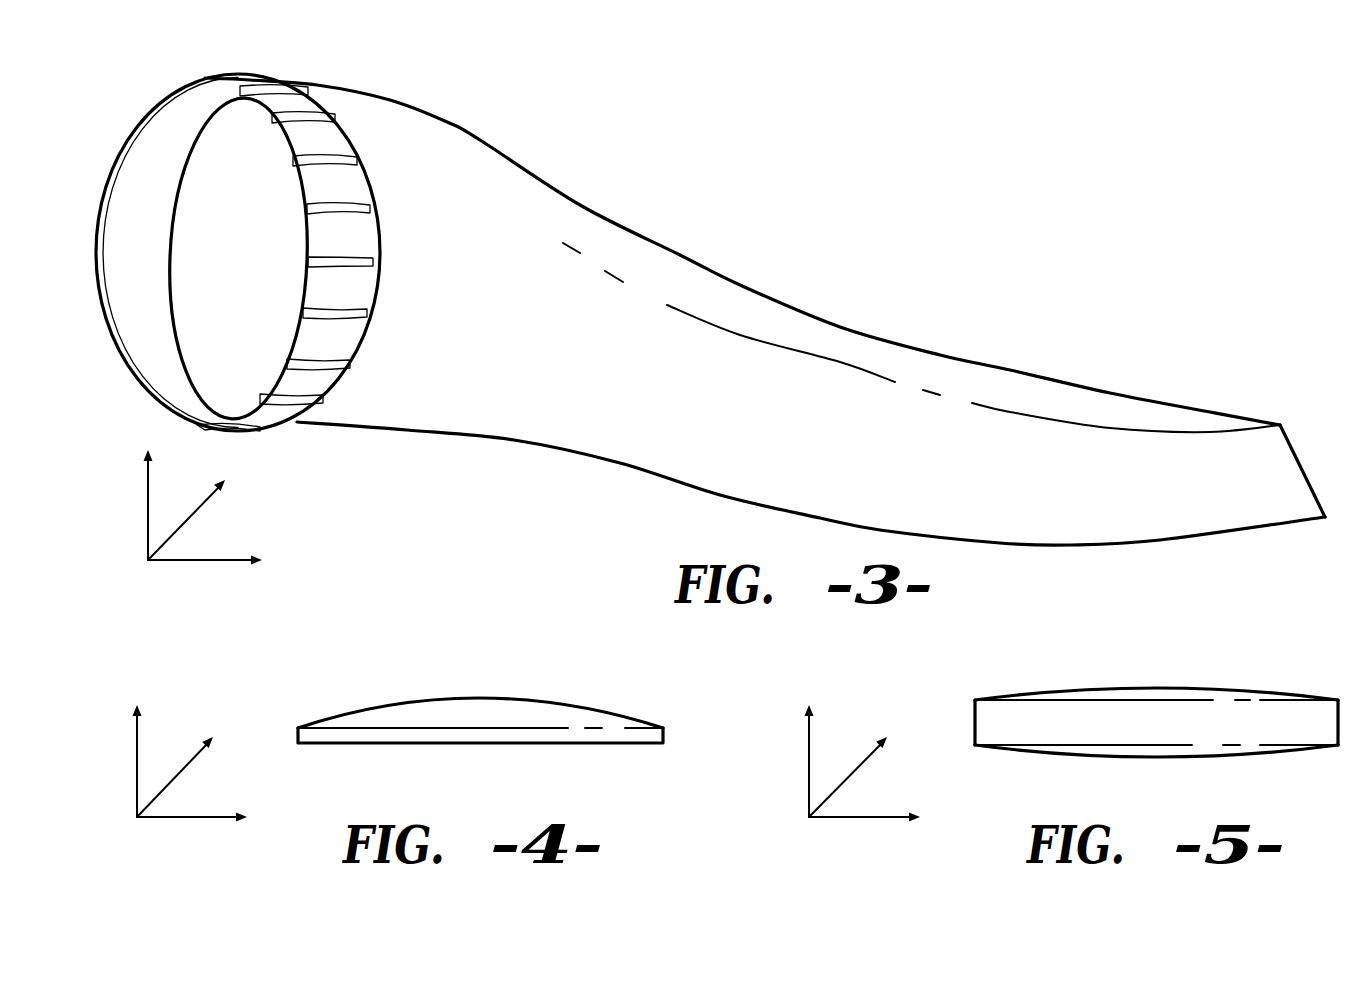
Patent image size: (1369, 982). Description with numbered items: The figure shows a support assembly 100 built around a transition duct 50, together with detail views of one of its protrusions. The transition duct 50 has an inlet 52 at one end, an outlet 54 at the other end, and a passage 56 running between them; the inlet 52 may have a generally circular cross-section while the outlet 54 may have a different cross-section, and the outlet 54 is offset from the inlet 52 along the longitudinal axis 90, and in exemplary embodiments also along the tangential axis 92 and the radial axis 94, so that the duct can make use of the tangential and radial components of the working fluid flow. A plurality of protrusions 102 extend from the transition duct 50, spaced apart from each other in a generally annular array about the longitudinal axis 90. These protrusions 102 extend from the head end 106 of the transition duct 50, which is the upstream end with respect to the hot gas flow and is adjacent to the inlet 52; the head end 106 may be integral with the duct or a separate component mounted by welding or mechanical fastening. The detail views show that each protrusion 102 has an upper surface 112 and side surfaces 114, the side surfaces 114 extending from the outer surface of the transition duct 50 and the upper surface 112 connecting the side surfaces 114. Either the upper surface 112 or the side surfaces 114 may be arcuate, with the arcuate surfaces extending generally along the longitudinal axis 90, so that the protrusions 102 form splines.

In FIG. 3, the support assembly 100 is at (792, 200).
In FIG. 3, the transition duct 50 is at (934, 330).
In FIG. 3, the inlet 52 is at (118, 147).
In FIG. 3, the outlet 54 is at (1292, 442).
In FIG. 3, the passage 56 is at (1052, 446).
In FIG. 3, the protrusion 102 is at (273, 93).
In FIG. 4, the protrusion 102 is at (522, 680).
In FIG. 5, the protrusion 102 is at (1225, 657).
In FIG. 3, the head end 106 is at (313, 143).
In FIG. 4, the upper surface 112 is at (475, 698).
In FIG. 5, the upper surface 112 is at (1225, 722).
In FIG. 4, the side surfaces 114 is at (552, 718).
In FIG. 5, the side surfaces 114 is at (1153, 695).
In FIG. 3, the longitudinal axis 90 is at (192, 563).
In FIG. 4, the longitudinal axis 90 is at (180, 818).
In FIG. 5, the longitudinal axis 90 is at (853, 818).
In FIG. 3, the tangential axis 92 is at (195, 513).
In FIG. 4, the tangential axis 92 is at (183, 770).
In FIG. 5, the tangential axis 92 is at (807, 773).
In FIG. 3, the radial axis 94 is at (147, 518).
In FIG. 4, the radial axis 94 is at (135, 773).
In FIG. 5, the radial axis 94 is at (858, 768).